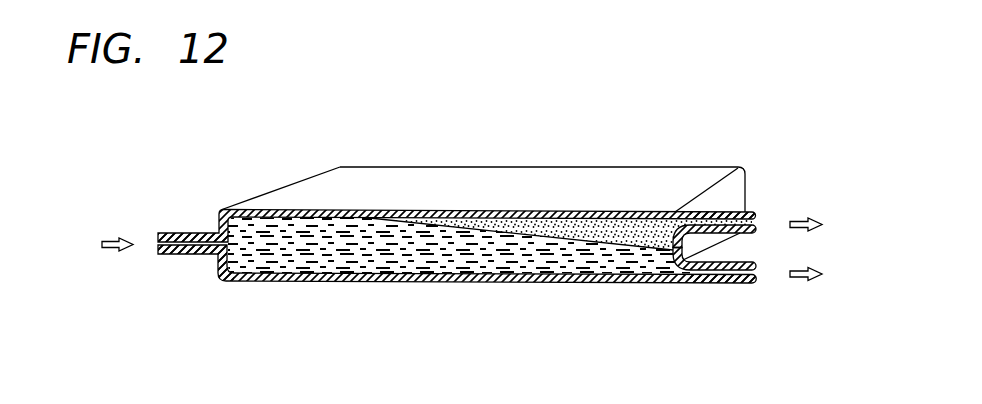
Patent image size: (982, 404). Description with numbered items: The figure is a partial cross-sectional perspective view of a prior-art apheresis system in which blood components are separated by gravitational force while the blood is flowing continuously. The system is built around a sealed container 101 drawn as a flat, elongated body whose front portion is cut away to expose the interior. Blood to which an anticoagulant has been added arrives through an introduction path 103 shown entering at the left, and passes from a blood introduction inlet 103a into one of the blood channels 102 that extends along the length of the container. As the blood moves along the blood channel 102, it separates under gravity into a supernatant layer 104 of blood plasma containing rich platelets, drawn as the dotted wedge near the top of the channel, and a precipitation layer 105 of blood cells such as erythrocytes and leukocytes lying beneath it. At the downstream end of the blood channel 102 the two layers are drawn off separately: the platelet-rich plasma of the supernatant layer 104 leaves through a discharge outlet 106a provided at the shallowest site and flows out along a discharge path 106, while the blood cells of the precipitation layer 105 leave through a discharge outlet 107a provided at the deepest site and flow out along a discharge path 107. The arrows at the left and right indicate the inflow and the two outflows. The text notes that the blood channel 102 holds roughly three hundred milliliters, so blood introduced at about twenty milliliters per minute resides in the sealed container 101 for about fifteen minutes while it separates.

The sealed container 101 is at (451, 184).
The blood channel 102 is at (350, 250).
The introduction path 103 is at (177, 233).
The blood introduction inlet 103a is at (231, 250).
The supernatant layer 104 is at (592, 233).
The precipitation layer 105 is at (580, 267).
The discharge path 106 is at (748, 212).
The discharge outlet 106a is at (677, 213).
The discharge path 107 is at (735, 283).
The discharge outlet 107a is at (667, 270).